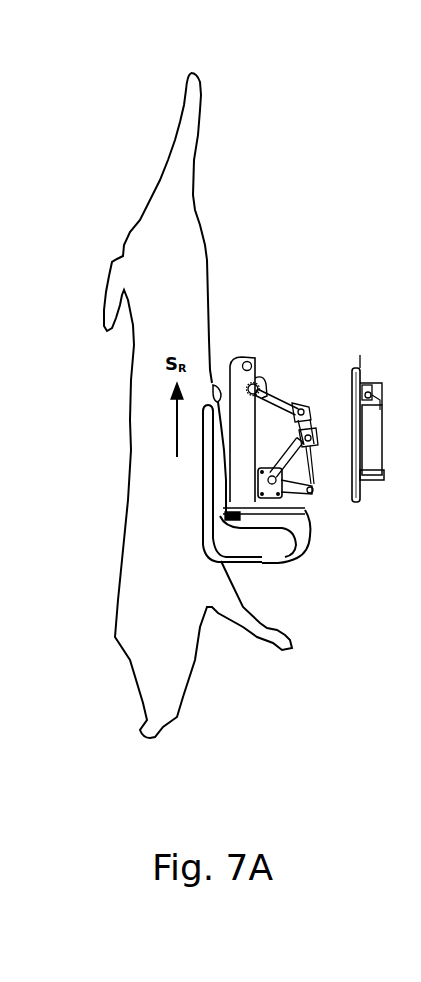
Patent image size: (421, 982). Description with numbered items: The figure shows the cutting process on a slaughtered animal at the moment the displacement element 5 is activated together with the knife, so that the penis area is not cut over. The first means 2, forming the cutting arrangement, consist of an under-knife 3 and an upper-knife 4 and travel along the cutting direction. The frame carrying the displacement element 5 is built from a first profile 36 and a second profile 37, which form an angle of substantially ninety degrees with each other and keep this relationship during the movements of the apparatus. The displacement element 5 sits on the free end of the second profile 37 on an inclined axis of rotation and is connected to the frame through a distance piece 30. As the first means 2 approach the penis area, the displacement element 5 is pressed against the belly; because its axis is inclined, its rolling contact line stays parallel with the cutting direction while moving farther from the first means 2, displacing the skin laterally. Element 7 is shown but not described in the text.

The first means/cutting arrangement 2 is at (234, 346).
The under-knife 3 is at (262, 561).
The upper-knife 4 is at (303, 550).
The displacement element 5 is at (280, 379).
The link 7 is at (309, 440).
The distance piece 30 is at (290, 400).
The first profile 36 is at (303, 497).
The second profile 37 is at (300, 448).